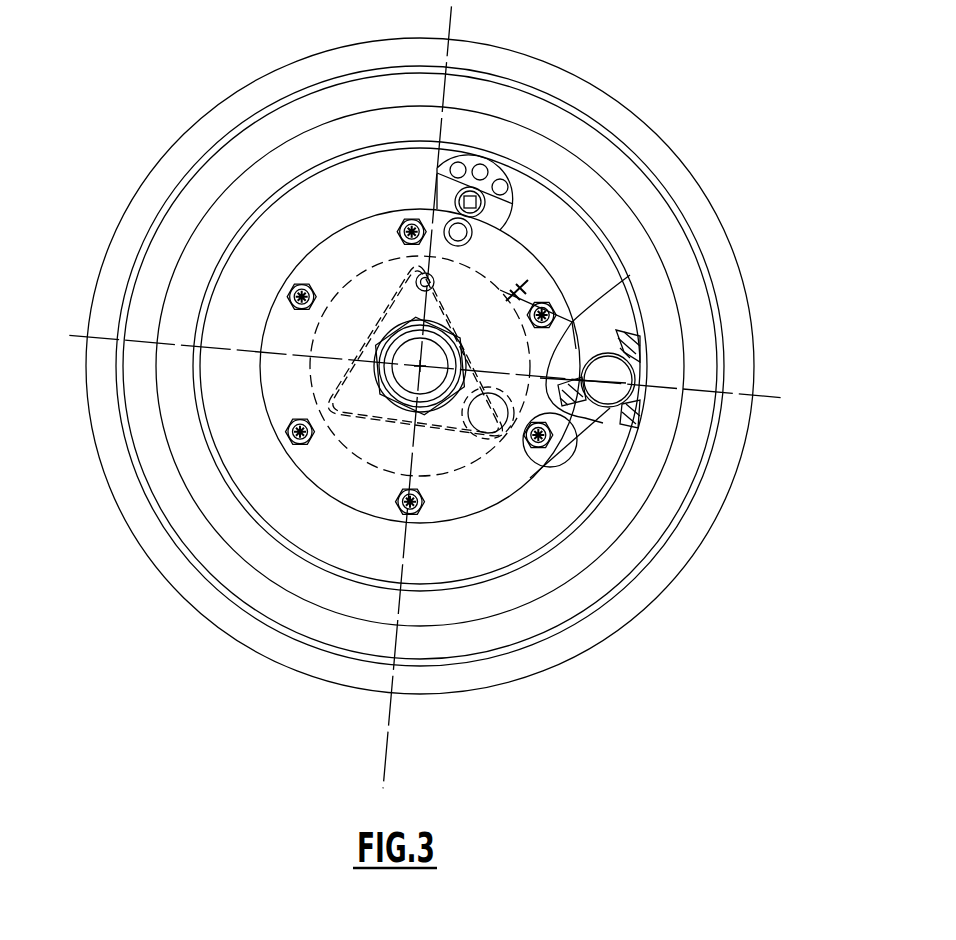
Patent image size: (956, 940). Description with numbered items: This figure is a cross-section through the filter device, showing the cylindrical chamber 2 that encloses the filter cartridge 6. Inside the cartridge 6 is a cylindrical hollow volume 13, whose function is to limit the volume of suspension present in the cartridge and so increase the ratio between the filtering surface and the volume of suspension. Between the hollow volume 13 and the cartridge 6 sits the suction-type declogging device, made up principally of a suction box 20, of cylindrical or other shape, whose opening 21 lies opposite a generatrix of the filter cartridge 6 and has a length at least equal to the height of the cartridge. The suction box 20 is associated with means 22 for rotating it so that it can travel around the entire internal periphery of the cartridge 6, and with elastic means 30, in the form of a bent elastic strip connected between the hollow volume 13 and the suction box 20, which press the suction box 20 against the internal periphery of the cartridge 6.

The cylindrical chamber 2 is at (667, 543).
The filter cartridge 6 is at (645, 323).
The cylindrical hollow volume 13 is at (378, 517).
The suction box 20 is at (603, 423).
The opening 21 is at (640, 390).
The means for rotating the suction box 22 is at (357, 250).
The elastic means 30 is at (630, 275).